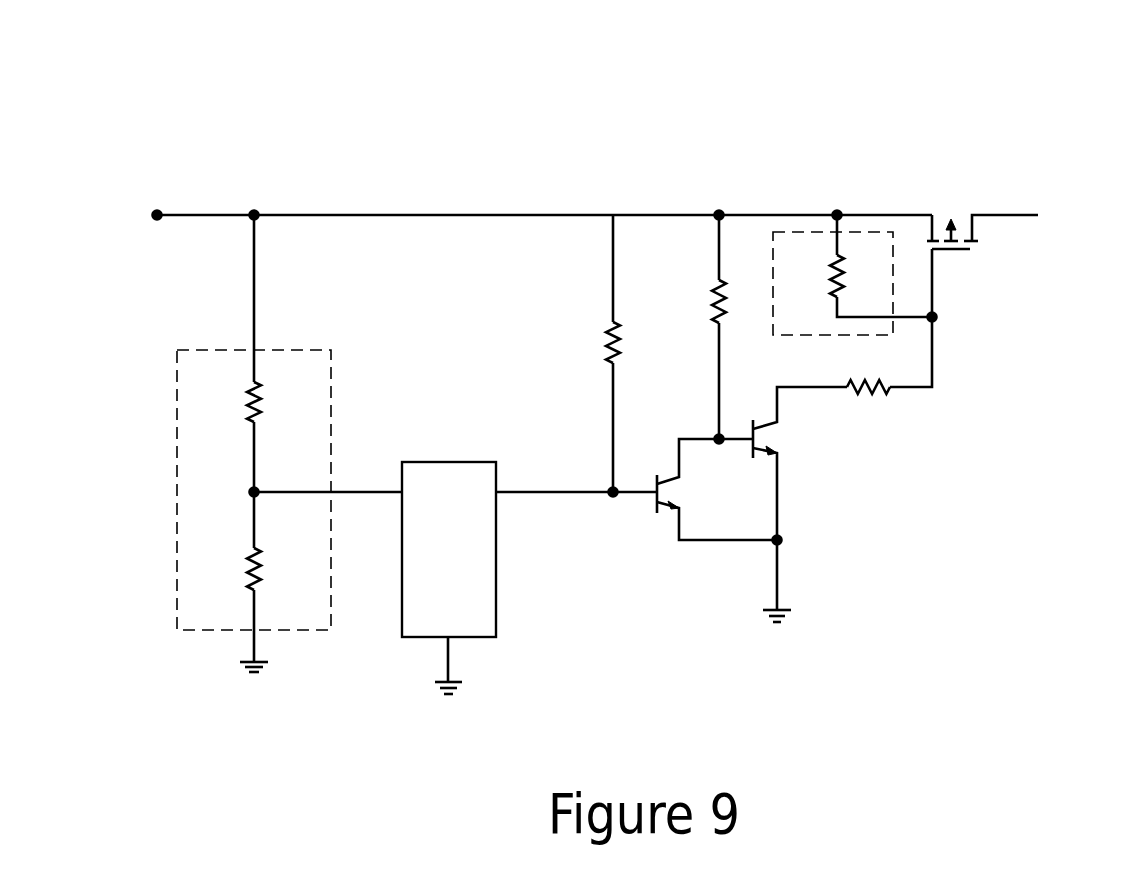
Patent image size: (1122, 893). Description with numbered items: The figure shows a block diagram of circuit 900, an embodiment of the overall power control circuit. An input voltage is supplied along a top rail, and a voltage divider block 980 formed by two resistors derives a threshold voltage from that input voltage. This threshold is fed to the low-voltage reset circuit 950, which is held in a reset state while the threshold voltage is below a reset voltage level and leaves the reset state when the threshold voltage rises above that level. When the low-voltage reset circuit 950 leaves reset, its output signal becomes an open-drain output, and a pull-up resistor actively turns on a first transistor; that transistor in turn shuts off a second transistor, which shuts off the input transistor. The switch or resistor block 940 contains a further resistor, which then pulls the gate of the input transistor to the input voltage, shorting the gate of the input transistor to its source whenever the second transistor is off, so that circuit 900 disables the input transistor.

The circuit 900 is at (625, 39).
The switch or resistor 940 is at (821, 259).
The low-voltage reset circuit 950 is at (466, 617).
The voltage divider 980 is at (224, 391).